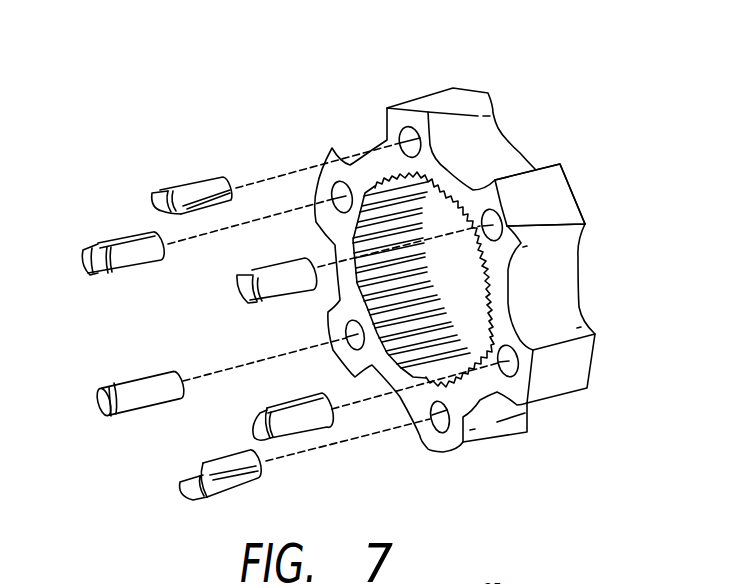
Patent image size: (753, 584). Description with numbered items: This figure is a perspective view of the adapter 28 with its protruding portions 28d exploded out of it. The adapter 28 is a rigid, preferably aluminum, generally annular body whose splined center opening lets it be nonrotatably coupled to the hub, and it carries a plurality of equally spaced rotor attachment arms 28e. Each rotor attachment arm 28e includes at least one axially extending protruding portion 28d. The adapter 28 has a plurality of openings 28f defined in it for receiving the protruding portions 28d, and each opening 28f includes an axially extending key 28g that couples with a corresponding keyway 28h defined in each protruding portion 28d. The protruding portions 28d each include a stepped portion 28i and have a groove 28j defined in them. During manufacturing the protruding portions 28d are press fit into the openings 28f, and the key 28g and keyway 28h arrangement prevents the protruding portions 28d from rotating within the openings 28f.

The adapter 28 is at (486, 71).
The protruding portion 28d is at (188, 189).
The rotor attachment arm 28e is at (557, 187).
The opening 28f is at (503, 227).
The key 28g is at (123, 240).
The keyway 28h is at (443, 418).
The stepped portion 28i is at (107, 396).
The groove 28j is at (248, 278).